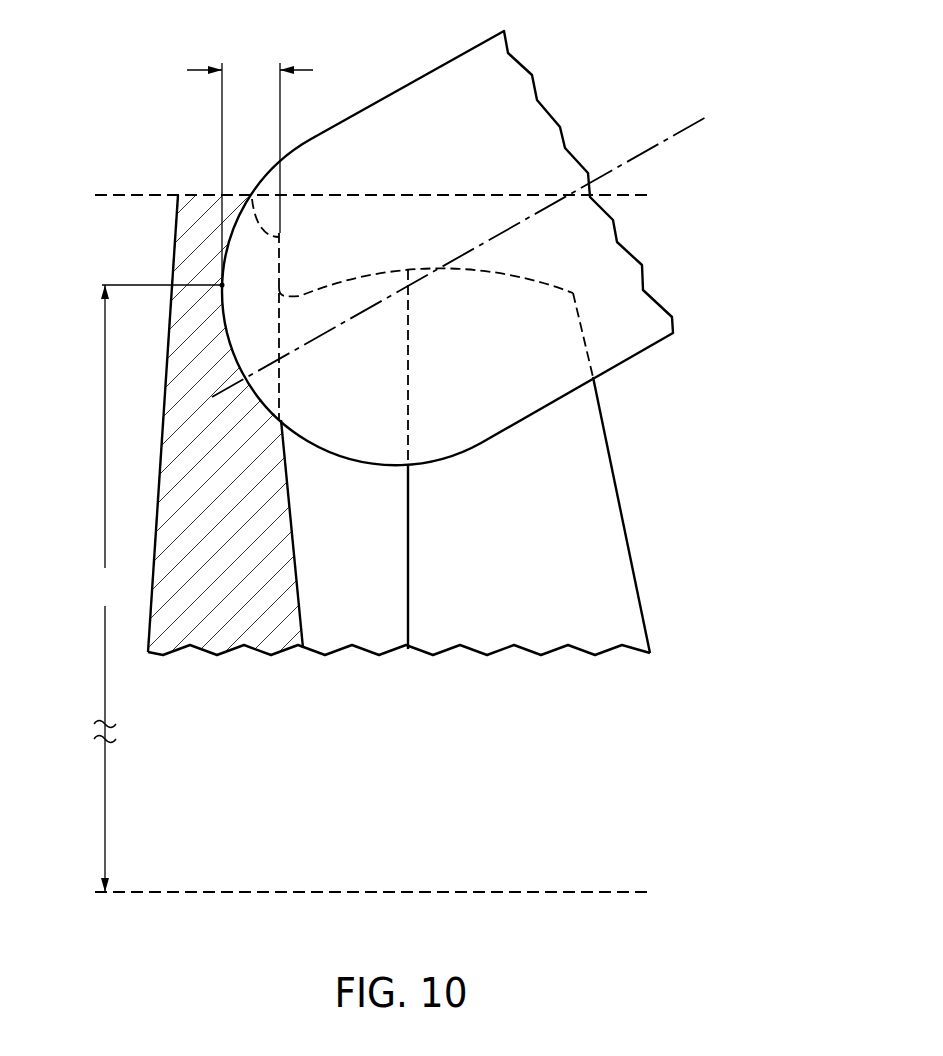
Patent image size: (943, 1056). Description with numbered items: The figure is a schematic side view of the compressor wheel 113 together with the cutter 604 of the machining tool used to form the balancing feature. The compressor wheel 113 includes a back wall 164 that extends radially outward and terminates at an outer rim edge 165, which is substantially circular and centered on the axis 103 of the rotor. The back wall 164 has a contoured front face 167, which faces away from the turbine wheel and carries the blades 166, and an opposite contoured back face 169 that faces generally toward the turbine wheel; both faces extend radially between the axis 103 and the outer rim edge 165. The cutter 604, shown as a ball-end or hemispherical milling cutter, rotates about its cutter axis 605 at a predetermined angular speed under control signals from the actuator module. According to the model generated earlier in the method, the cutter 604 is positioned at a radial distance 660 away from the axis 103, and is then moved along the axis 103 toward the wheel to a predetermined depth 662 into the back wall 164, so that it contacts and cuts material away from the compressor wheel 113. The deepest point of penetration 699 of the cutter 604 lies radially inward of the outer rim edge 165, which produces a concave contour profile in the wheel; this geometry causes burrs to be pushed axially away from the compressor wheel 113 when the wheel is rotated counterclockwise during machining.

The cutter 604 is at (402, 98).
The cutter axis 605 is at (693, 120).
The outer rim edge 165 is at (186, 195).
The back face 169 is at (158, 508).
The back wall 164 is at (287, 592).
The front face 167 is at (293, 523).
The compressor wheel 113 is at (628, 480).
The blades 166 is at (622, 592).
The axis 103 is at (268, 893).
The deepest point of penetration 699 is at (220, 285).
The predetermined depth 662 is at (250, 144).
The radial distance 660 is at (151, 588).